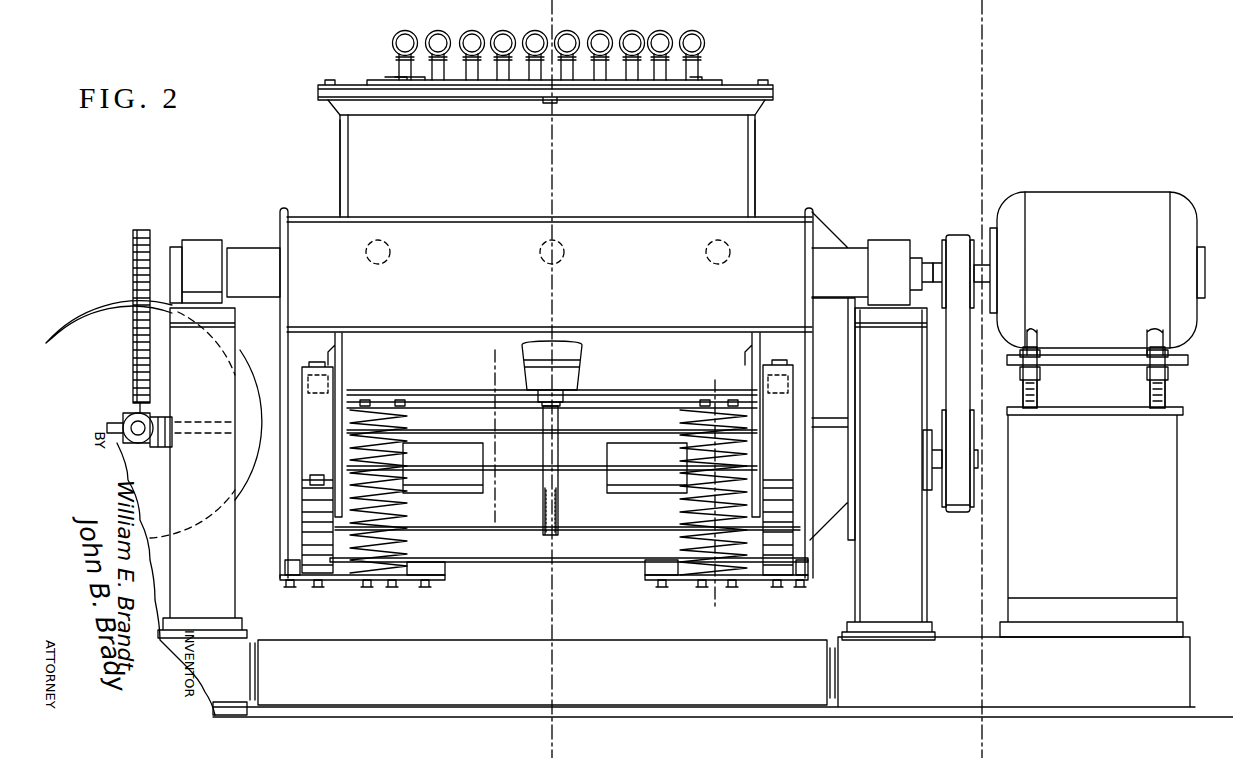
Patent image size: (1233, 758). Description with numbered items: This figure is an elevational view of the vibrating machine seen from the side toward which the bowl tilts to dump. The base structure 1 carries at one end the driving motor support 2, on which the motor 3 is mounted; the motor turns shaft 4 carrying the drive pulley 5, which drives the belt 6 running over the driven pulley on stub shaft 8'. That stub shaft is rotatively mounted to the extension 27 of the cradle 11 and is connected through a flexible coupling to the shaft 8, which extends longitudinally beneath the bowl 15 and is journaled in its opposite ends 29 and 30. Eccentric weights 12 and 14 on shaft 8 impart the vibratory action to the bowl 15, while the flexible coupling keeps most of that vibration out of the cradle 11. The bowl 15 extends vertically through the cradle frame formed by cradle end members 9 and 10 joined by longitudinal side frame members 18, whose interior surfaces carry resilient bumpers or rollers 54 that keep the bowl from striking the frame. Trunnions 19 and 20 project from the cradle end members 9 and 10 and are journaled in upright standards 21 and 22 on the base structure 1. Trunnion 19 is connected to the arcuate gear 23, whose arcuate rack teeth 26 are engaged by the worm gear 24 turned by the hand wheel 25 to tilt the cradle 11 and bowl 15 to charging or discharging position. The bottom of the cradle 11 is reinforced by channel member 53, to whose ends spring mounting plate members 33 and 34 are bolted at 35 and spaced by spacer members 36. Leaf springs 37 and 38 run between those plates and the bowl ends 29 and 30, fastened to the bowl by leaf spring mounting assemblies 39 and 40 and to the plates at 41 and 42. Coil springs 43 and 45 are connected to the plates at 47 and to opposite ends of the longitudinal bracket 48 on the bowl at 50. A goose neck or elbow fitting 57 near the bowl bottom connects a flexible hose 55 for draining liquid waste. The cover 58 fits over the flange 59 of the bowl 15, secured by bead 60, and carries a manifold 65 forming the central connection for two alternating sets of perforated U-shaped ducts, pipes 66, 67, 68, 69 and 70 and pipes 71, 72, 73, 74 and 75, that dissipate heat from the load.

The base structure 1 is at (232, 688).
The driving motor support 2 is at (1110, 522).
The motor 3 is at (1100, 210).
The shaft 4 is at (942, 262).
The drive pulley 5 is at (955, 45).
The belt 6 is at (962, 375).
The shaft 8 is at (552, 469).
The stub shaft 8' is at (917, 509).
The cradle end member 9 is at (520, 368).
The cradle end member 10 is at (740, 382).
The cradle 11 is at (814, 200).
The eccentric portion or weight 12 is at (455, 485).
The eccentric portion or weight 14 is at (645, 485).
The bowl 15 is at (573, 112).
The longitudinal side frame member 18 is at (450, 225).
The trunnion 19 is at (182, 256).
The trunnion 20 is at (886, 248).
The upright standard 21 is at (218, 245).
The upright standard 22 is at (893, 315).
The arcuate gear 23 is at (131, 246).
The worm gear 24 is at (127, 407).
The hand wheel 25 is at (103, 322).
The arcuate rack teeth 26 is at (150, 230).
The extension 27 is at (930, 462).
The bowl end 29 is at (341, 133).
The bowl end 30 is at (757, 172).
The spring mounting plate member 33 is at (360, 582).
The spring mounting plate member 34 is at (740, 582).
The bolts 35 is at (300, 510).
The spacer member 36 is at (290, 568).
The leaf spring 37 is at (308, 493).
The leaf spring 38 is at (783, 410).
The leaf spring mounting assembly 39 is at (340, 355).
The leaf spring mounting assembly 40 is at (752, 345).
The leaf spring connection 41 is at (318, 588).
The leaf spring connection 42 is at (777, 588).
The coil spring 43 is at (412, 540).
The coil spring 45 is at (690, 535).
The coil spring connection 47 is at (367, 588).
The bracket 48 is at (440, 416).
The coil spring connection 50 is at (400, 400).
The channel member 53 is at (545, 548).
The bumpers or rollers 54 is at (388, 260).
The flexible hose 55 is at (560, 530).
The goose neck or elbow fitting 57 is at (578, 357).
The cover 58 is at (778, 96).
The flange 59 is at (625, 110).
The bead 60 is at (425, 92).
The manifold 65 is at (395, 80).
The U-shaped pipe 66 is at (405, 40).
The U-shaped pipe 67 is at (472, 42).
The U-shaped pipe 68 is at (535, 72).
The U-shaped pipe 69 is at (602, 72).
The U-shaped pipe 70 is at (662, 42).
The pipe 71 is at (438, 42).
The pipe 72 is at (501, 72).
The pipe 73 is at (567, 42).
The pipe 74 is at (632, 42).
The pipe 75 is at (695, 45).